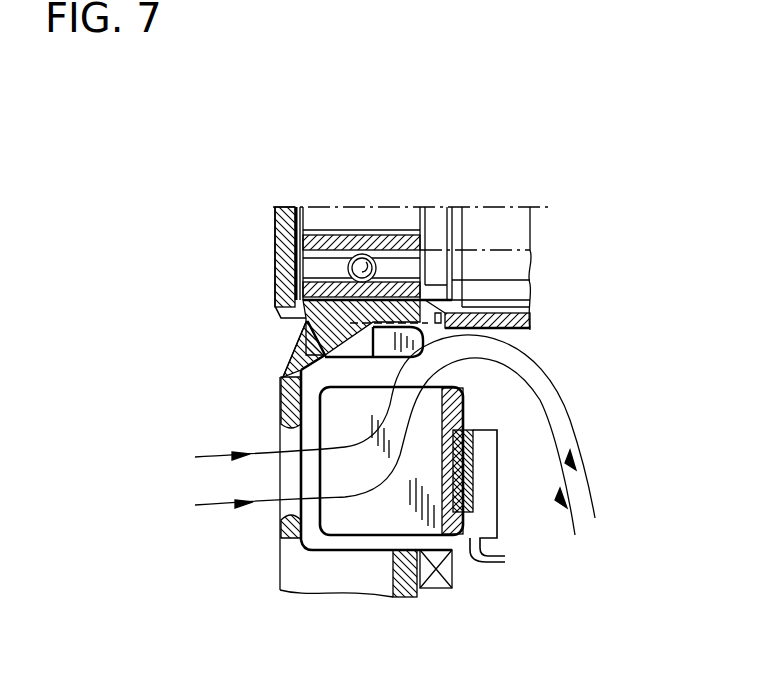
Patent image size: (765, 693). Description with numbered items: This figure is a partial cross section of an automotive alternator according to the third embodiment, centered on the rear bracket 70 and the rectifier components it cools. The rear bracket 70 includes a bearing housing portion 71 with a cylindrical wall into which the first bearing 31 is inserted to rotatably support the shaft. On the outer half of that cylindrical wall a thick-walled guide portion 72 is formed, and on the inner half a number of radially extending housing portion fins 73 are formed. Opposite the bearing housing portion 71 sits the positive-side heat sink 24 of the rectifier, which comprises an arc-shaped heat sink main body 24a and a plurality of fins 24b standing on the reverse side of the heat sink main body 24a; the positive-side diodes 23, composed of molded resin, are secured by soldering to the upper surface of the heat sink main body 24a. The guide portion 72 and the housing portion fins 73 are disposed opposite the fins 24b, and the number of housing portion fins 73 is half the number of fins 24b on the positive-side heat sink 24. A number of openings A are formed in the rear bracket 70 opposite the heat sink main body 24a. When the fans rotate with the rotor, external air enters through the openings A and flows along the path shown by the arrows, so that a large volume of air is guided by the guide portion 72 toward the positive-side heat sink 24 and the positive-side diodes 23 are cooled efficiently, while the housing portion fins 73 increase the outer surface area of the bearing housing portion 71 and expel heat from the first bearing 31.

The first bearing 31 is at (397, 237).
The rear bracket 70 is at (278, 398).
The bearing housing portion 71 is at (282, 245).
The guide portion 72 is at (295, 352).
The housing portion fins 73 is at (527, 320).
The positive-side diodes 23 is at (488, 502).
The positive-side heat sink 24 is at (394, 531).
The heat sink main body 24a is at (450, 528).
The fins 24b is at (345, 512).
The openings A is at (278, 440).